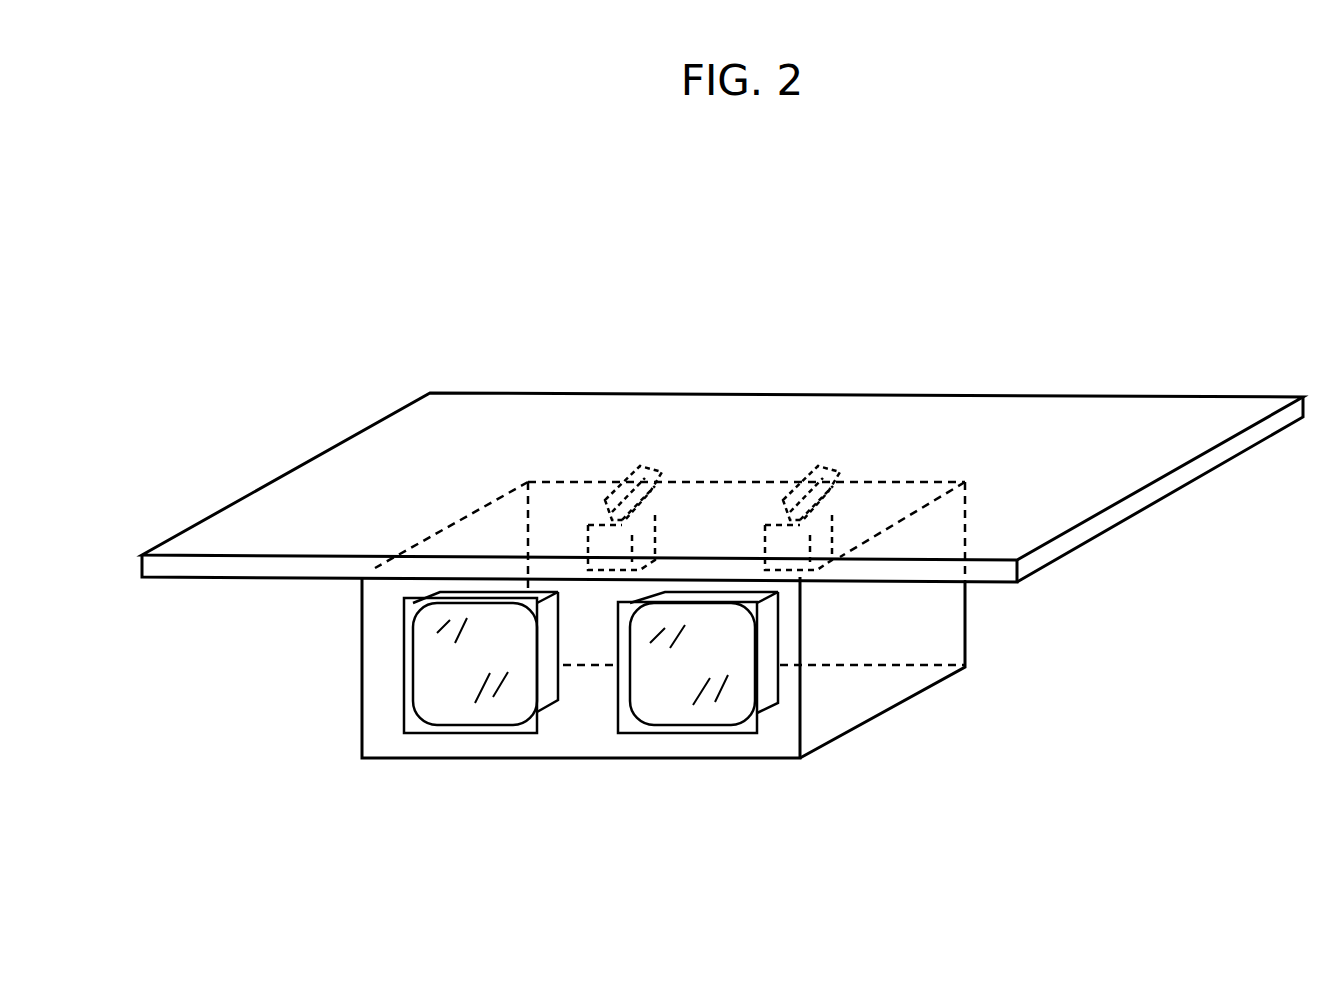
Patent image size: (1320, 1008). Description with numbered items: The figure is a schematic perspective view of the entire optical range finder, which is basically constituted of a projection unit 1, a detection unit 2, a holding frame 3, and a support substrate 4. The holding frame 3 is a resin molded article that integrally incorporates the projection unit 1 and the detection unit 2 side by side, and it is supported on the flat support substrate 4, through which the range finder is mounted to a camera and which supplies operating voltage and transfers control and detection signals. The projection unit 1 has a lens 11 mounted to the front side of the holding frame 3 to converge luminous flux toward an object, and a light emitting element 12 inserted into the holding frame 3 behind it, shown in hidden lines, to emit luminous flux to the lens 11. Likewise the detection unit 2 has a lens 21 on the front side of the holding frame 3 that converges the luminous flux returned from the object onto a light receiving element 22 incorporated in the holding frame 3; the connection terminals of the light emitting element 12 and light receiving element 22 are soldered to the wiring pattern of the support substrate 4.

The projection unit 1 is at (413, 731).
The detection unit 2 is at (697, 757).
The holding frame 3 is at (863, 702).
The support substrate 4 is at (1133, 505).
The lens 11 is at (433, 673).
The light emitting element 12 is at (588, 555).
The lens 21 is at (667, 697).
The light receiving element 22 is at (825, 535).